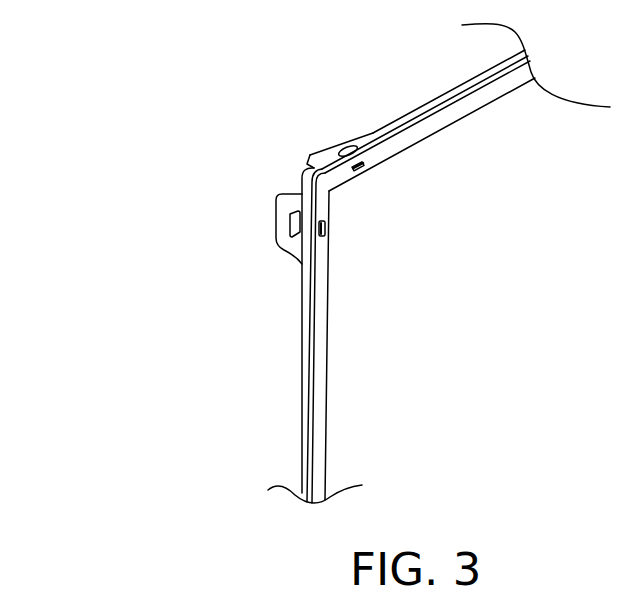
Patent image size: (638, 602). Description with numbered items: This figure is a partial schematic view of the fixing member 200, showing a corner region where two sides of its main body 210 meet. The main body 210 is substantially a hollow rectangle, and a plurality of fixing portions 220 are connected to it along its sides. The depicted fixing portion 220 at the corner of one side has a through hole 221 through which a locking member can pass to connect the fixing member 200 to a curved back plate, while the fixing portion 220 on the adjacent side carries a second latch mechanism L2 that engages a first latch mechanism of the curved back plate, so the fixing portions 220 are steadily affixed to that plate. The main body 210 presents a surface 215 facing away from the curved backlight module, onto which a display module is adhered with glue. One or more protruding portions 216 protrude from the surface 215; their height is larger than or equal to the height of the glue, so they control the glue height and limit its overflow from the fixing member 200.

The fixing member 200 is at (72, 50).
The main body 210 is at (474, 113).
The surface 215 is at (326, 398).
The protruding portion 216 is at (364, 169).
The fixing portion 220 is at (321, 157).
The through hole 221 is at (348, 148).
The second latch mechanism L2 is at (292, 224).